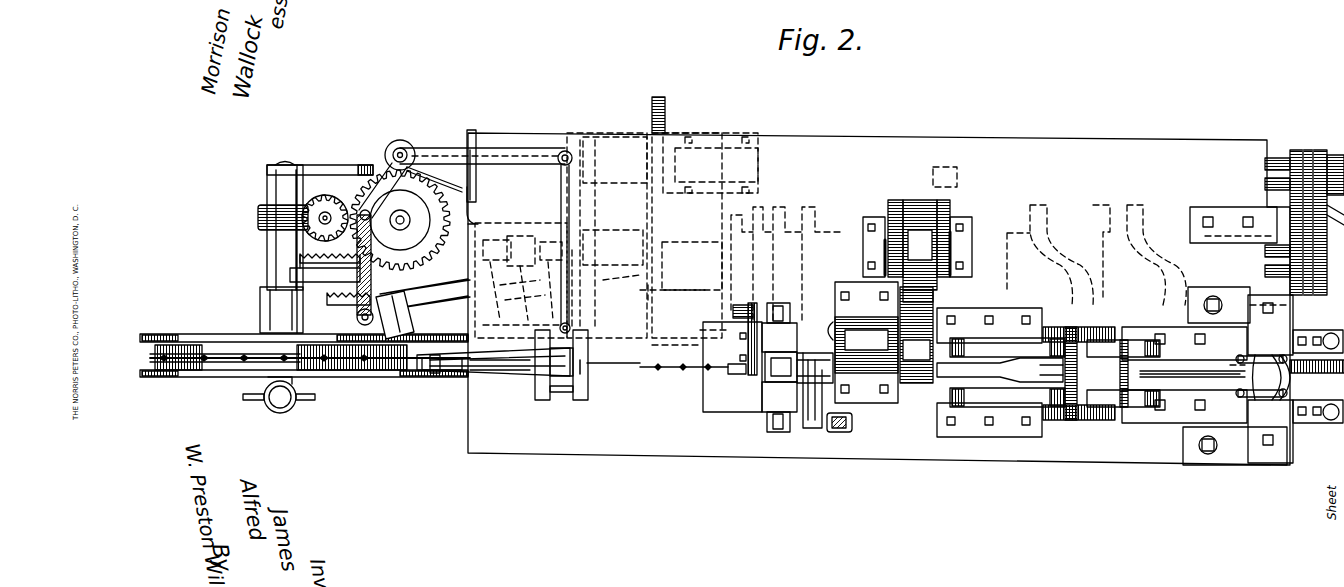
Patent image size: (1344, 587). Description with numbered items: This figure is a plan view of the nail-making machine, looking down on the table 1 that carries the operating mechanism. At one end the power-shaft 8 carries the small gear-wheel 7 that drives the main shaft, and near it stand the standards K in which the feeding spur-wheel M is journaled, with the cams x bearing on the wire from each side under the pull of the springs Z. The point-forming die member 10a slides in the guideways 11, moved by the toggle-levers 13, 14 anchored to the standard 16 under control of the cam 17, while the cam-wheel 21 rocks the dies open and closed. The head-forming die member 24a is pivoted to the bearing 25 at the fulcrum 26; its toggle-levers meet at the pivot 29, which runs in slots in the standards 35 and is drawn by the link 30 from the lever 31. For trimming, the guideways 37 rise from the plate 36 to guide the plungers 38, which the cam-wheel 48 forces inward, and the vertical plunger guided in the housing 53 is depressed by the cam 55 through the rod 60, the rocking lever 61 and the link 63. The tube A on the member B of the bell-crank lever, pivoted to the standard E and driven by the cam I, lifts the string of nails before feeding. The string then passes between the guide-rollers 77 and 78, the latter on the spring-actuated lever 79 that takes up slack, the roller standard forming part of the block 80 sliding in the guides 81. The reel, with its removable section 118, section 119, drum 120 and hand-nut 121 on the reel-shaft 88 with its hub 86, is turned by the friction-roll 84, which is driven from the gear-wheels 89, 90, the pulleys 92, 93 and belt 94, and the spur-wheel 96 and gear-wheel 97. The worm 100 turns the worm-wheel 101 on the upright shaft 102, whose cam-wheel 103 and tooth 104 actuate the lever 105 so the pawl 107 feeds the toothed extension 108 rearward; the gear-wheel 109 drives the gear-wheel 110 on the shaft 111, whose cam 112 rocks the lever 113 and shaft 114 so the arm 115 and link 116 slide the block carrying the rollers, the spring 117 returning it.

The table 1 is at (879, 299).
The small gear-wheel 7 is at (1318, 150).
The power-shaft 8 is at (1335, 177).
The die member 10a is at (1001, 372).
The guideways 11 is at (989, 372).
The toggle-lever 13 is at (1078, 326).
The toggle-lever 14 is at (1120, 348).
The standard 16 is at (1175, 340).
The cam 17 is at (1173, 208).
The cam-wheel 21 is at (1086, 207).
The head-forming die member 24a is at (916, 335).
The bearing 25 is at (866, 342).
The fulcrum pivot 26 is at (833, 333).
The pivot 29 is at (880, 256).
The link 30 is at (893, 215).
The lever 31 is at (914, 208).
The standard 35 is at (870, 238).
The plate 36 is at (737, 368).
The guideways 37 is at (779, 367).
The plunger 38 is at (786, 302).
The cam-wheel 48 is at (782, 208).
The housing 53 is at (775, 366).
The cam 55 is at (812, 210).
The rod 60 is at (853, 424).
The rocking lever 61 is at (826, 428).
The link 63 is at (800, 360).
The guide-rollers 77 is at (587, 372).
The guide-rollers 78 is at (433, 372).
The lever 79 is at (518, 378).
The block 80 is at (563, 393).
The guides 81 is at (542, 402).
The friction-roll 84 is at (378, 378).
The hub 86 is at (262, 308).
The reel-shaft 88 is at (290, 163).
The gear-wheel 89 is at (640, 290).
The gear-wheel 90 is at (667, 107).
The pulley 92 is at (610, 142).
The pulley 93 is at (585, 290).
The belt 94 is at (578, 222).
The spur-wheel 96 is at (518, 246).
The gear-wheel 97 is at (526, 310).
The worm 100 is at (258, 218).
The worm-wheel 101 is at (327, 212).
The upright shaft 102 is at (367, 207).
The cam-wheel 103 is at (298, 248).
The tooth 104 is at (362, 258).
The lever 105 is at (372, 278).
The pawl 107 is at (358, 314).
The extension 108 is at (422, 300).
The gear-wheel 109 is at (325, 193).
The gear-wheel 110 is at (420, 252).
The upright shaft 111 is at (410, 226).
The cam 112 is at (470, 214).
The lever 113 is at (400, 220).
The upright shaft 114 is at (405, 148).
The arm 115 is at (506, 158).
The link 116 is at (562, 186).
The spring 117 is at (474, 189).
The removable reel section 118 is at (238, 378).
The reel section 119 is at (304, 327).
The drum 120 is at (208, 368).
The hand-nut 121 is at (280, 413).
The cam I is at (740, 226).
The standard E is at (755, 300).
The bell-crank member B is at (742, 345).
The tube A is at (745, 377).
The springs Z is at (1238, 358).
The spur-wheel M is at (1270, 379).
The cams x is at (1263, 367).
The standards K is at (1308, 330).